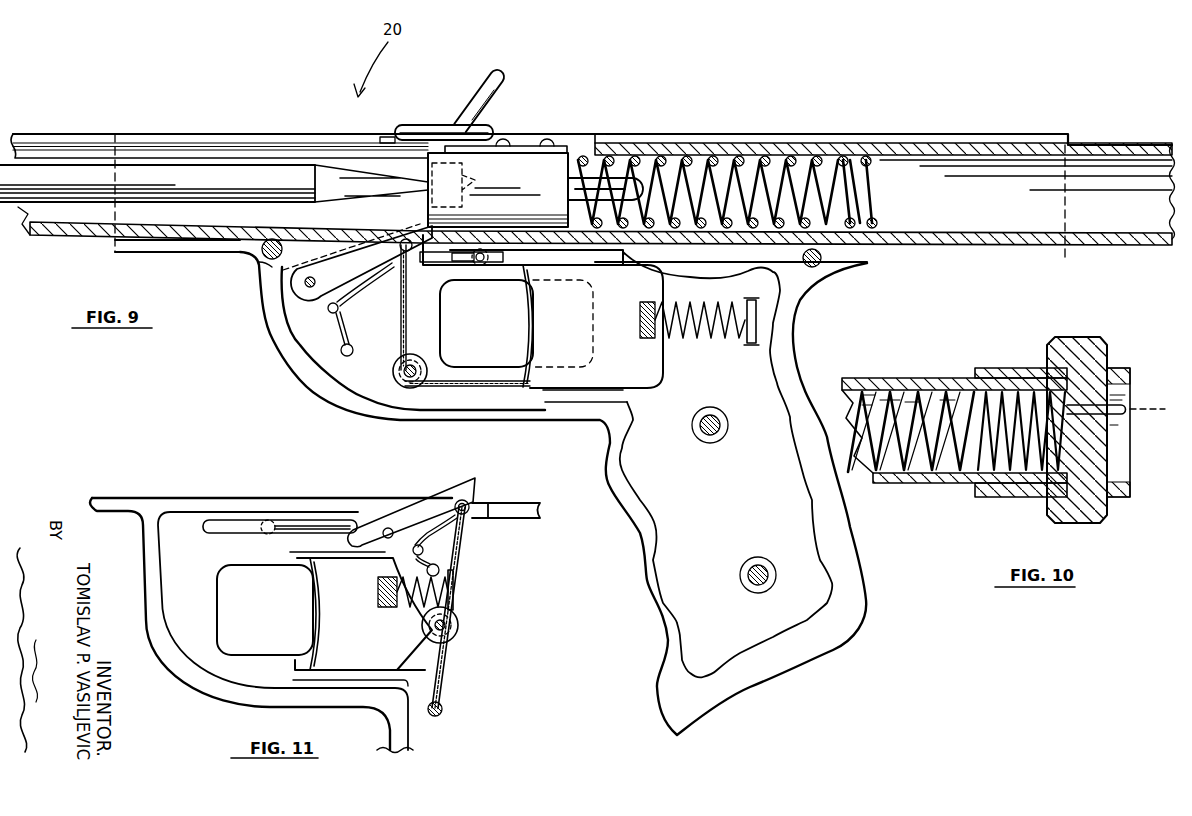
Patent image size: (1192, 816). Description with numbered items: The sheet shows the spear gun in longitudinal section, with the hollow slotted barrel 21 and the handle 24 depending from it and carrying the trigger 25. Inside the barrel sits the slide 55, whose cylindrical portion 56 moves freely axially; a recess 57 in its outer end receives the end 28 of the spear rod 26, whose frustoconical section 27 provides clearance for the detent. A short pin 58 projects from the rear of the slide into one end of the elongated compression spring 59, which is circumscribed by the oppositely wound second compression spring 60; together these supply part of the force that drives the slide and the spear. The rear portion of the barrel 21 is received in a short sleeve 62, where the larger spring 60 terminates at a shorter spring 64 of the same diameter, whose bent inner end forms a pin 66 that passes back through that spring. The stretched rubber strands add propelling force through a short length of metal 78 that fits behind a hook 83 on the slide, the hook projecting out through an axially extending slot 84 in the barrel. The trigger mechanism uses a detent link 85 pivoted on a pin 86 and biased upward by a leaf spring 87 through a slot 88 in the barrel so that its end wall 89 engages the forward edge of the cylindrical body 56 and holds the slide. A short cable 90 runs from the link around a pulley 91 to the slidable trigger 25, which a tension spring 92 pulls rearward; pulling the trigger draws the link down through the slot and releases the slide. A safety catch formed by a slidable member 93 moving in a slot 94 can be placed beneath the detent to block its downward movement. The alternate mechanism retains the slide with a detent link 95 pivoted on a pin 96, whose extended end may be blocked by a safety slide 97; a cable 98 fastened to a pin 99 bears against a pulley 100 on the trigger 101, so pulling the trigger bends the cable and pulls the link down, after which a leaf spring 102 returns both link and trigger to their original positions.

In FIG. 9, the barrel 21 is at (60, 132).
In FIG. 10, the barrel 21 is at (940, 380).
In FIG. 9, the handle 24 is at (866, 563).
In FIG. 9, the trigger 25 is at (530, 322).
In FIG. 9, the spear rod 26 is at (198, 176).
In FIG. 9, the frustoconical section 27 is at (347, 177).
In FIG. 9, the end of the spear rod 28 is at (479, 189).
In FIG. 9, the slide 55 is at (557, 146).
In FIG. 9, the cylindrical portion 56 is at (532, 165).
In FIG. 9, the recess 57 is at (392, 140).
In FIG. 9, the pin 58 is at (632, 178).
In FIG. 9, the compression spring 59 is at (676, 173).
In FIG. 9, the second compression spring 60 is at (872, 172).
In FIG. 10, the second compression spring 60 is at (932, 470).
In FIG. 10, the sleeve 62 is at (1020, 368).
In FIG. 10, the shorter spring 64 is at (1003, 480).
In FIG. 10, the pin 66 is at (1125, 408).
In FIG. 9, the length of metal 78 is at (437, 130).
In FIG. 9, the hook 83 is at (505, 90).
In FIG. 9, the slot 84 is at (148, 139).
In FIG. 9, the detent link 85 is at (283, 270).
In FIG. 9, the pin 86 is at (308, 290).
In FIG. 9, the leaf spring 87 is at (357, 285).
In FIG. 9, the slot 88 is at (368, 228).
In FIG. 9, the end wall 89 is at (425, 253).
In FIG. 9, the cable 90 is at (405, 300).
In FIG. 9, the pulley 91 is at (393, 372).
In FIG. 9, the tension spring 92 is at (690, 336).
In FIG. 11, the tension spring 92 is at (455, 590).
In FIG. 9, the slidable member 93 is at (485, 266).
In FIG. 9, the slot 94 is at (443, 263).
In FIG. 11, the detent link 95 is at (478, 489).
In FIG. 11, the pin 96 is at (388, 528).
In FIG. 11, the safety slide 97 is at (325, 524).
In FIG. 11, the cable 98 is at (465, 560).
In FIG. 11, the pin 99 is at (440, 715).
In FIG. 11, the pulley 100 is at (458, 628).
In FIG. 11, the trigger 101 is at (330, 603).
In FIG. 11, the leaf spring 102 is at (463, 541).